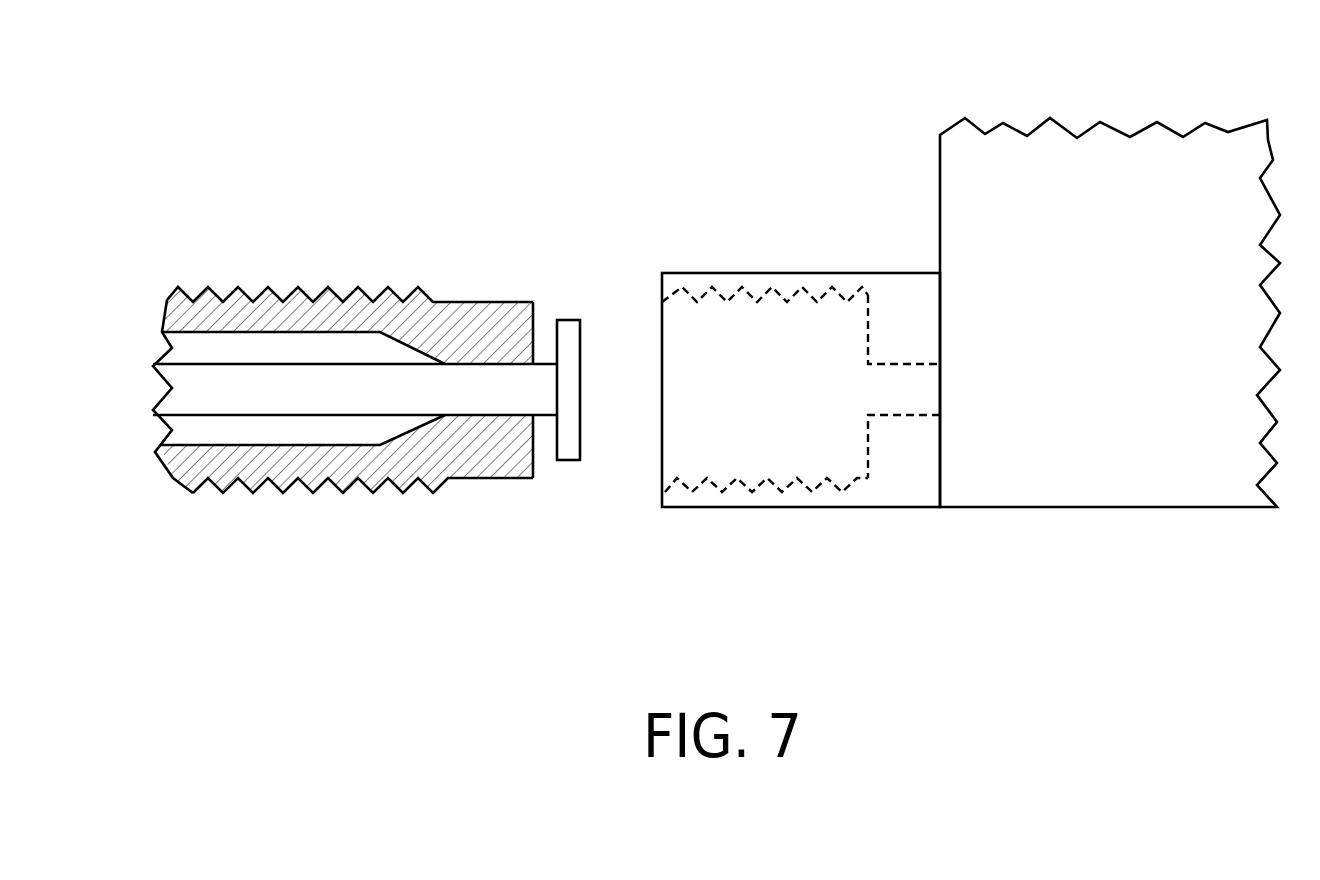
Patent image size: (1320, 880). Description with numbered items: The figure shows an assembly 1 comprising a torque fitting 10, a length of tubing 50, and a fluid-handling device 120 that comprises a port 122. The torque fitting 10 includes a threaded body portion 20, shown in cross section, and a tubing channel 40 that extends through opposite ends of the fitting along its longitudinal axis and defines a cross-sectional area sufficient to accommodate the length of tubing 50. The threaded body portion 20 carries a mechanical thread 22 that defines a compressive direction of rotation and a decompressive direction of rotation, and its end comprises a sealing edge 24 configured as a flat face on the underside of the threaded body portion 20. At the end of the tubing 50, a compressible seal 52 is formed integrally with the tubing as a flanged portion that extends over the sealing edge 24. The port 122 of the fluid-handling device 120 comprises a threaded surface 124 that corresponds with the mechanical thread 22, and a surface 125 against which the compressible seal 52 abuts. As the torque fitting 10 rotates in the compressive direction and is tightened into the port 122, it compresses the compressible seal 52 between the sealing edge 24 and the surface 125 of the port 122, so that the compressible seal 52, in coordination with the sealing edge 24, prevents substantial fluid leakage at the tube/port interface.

The assembly 1 is at (711, 294).
The torque fitting 10 is at (372, 347).
The threaded body portion 20 is at (437, 452).
The mechanical thread 22 is at (190, 494).
The sealing edge 24 is at (546, 468).
The tubing channel 40 is at (195, 350).
The length of tubing 50 is at (318, 375).
The compressible seal 52 is at (570, 320).
The fluid-handling device 120 is at (1110, 524).
The port 122 is at (830, 524).
The threaded surface 124 is at (753, 298).
The surface of the port 125 is at (867, 332).